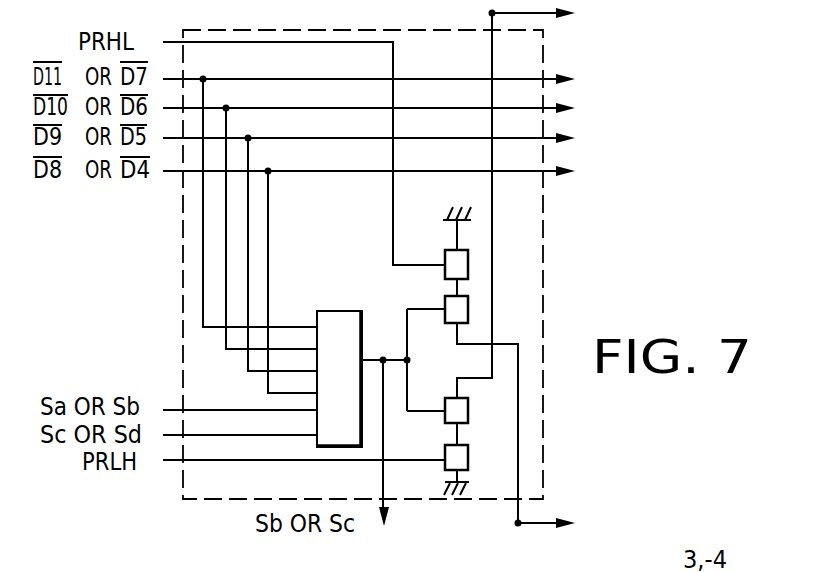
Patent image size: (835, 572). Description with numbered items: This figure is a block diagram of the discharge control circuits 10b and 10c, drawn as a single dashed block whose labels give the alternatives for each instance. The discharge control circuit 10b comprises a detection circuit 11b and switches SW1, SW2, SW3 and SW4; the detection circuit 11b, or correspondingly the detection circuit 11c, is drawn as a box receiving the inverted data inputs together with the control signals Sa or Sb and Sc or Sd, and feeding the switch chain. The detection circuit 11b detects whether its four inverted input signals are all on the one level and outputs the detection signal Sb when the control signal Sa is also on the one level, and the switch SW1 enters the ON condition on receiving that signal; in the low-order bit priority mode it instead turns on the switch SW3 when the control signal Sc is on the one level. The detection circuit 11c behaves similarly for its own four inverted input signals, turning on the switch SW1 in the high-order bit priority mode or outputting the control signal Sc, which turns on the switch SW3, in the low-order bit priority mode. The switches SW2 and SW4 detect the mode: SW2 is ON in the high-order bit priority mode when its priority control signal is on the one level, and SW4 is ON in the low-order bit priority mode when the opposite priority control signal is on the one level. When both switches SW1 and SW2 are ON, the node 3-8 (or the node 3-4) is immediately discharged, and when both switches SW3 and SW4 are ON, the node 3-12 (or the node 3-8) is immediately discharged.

The discharge control circuit 10b is at (289, 264).
The discharge control circuit 10c is at (183, 344).
The detection circuit 11b is at (321, 351).
The detection circuit 11c is at (330, 311).
The switch SW1 is at (447, 302).
The switch SW2 is at (449, 252).
The switch SW3 is at (449, 400).
The switch SW4 is at (447, 449).
The node 3-12 is at (489, 13).
The node 3-8 is at (484, 547).
The node 3-4 is at (518, 525).